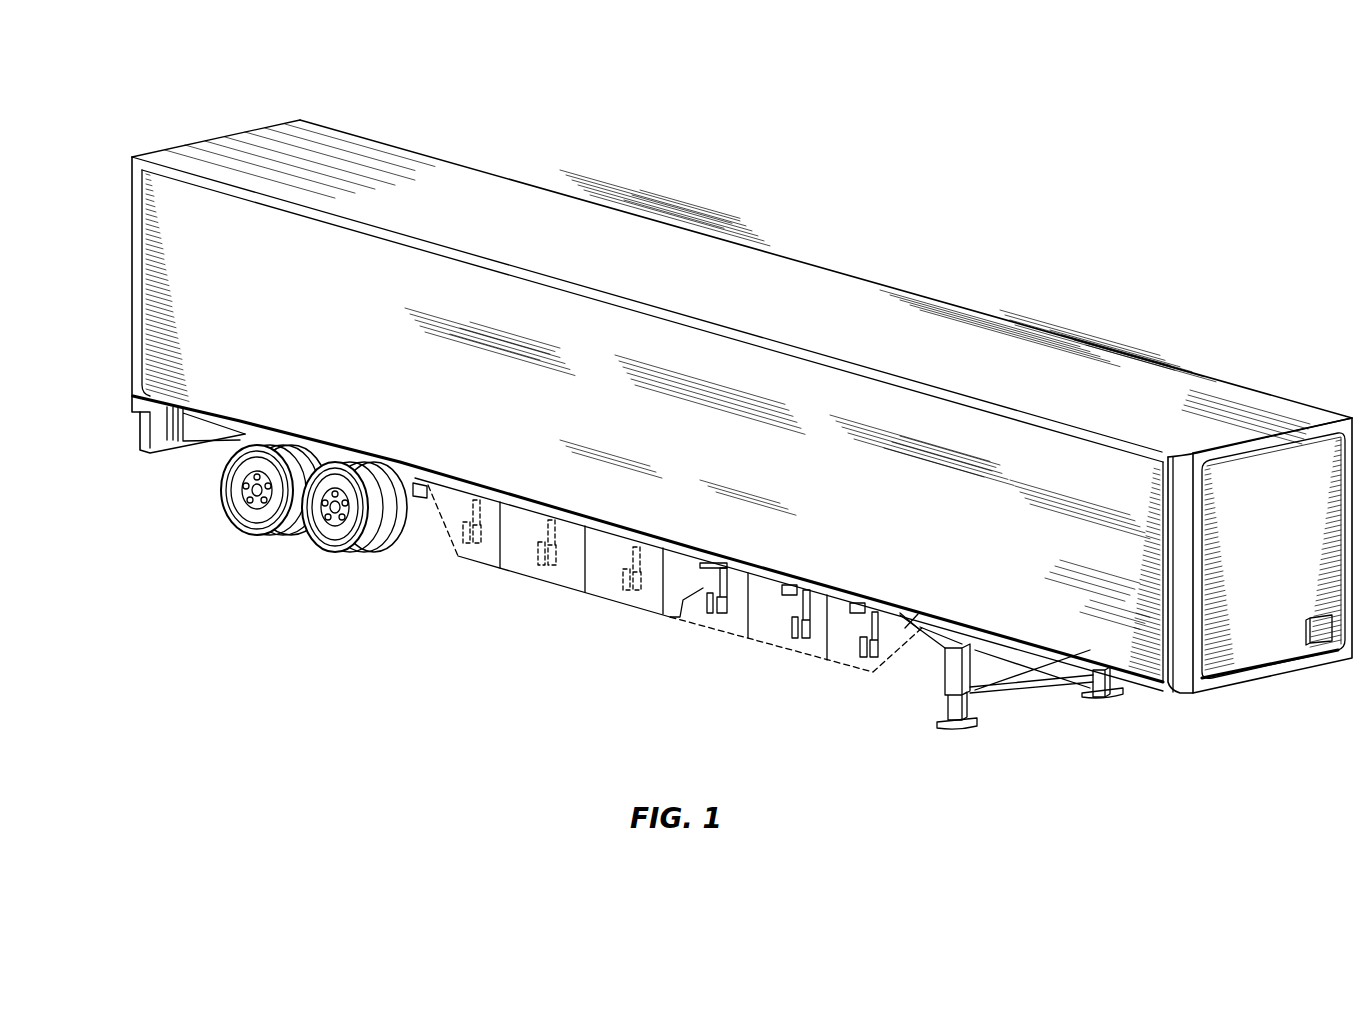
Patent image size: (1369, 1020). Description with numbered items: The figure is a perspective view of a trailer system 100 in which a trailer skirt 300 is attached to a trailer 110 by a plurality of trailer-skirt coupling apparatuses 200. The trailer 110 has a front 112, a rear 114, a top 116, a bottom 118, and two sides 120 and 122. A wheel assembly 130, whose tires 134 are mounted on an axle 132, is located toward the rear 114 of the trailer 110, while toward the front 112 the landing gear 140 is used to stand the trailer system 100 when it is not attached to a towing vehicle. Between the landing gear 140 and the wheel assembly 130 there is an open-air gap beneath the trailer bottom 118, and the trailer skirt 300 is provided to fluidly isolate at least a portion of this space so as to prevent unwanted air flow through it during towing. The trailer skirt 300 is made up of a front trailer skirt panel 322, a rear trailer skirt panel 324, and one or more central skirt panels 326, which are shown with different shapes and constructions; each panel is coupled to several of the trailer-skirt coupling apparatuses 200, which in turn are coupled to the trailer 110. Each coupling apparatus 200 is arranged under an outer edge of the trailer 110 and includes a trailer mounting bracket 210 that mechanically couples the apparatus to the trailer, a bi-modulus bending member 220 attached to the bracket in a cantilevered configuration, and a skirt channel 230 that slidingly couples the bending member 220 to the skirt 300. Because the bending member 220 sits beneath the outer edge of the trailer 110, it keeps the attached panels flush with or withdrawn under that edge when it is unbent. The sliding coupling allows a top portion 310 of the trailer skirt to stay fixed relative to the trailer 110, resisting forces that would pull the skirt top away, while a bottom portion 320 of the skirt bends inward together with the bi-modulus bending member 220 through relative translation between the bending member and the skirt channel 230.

The trailer system 100 is at (1093, 178).
The trailer 110 is at (345, 315).
The front 112 is at (1288, 561).
The rear 114 is at (132, 270).
The top 116 is at (728, 298).
The bottom 118 is at (1193, 693).
The side 120 is at (1137, 357).
The side 122 is at (140, 405).
The wheel assembly 130 is at (297, 518).
The axle 132 is at (408, 533).
The tires 134 is at (238, 523).
The landing gear 140 is at (1032, 692).
The trailer-skirt coupling apparatus 200 is at (545, 500).
The trailer mounting bracket 210 is at (783, 590).
The bi-modulus bending member 220 is at (727, 585).
The skirt channel 230 is at (698, 587).
The trailer skirt 300 is at (789, 562).
The top portion of the trailer skirt 310 is at (488, 492).
The bottom portion of the skirt 320 is at (573, 590).
The front trailer skirt panel 322 is at (893, 643).
The rear trailer skirt panel 324 is at (482, 557).
The central skirt panels 326 is at (543, 572).